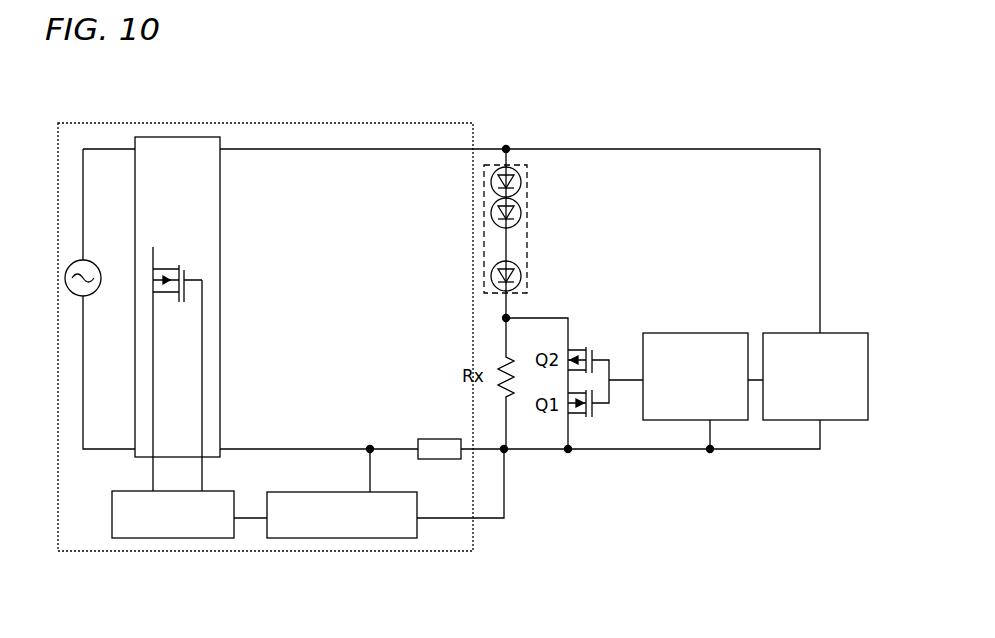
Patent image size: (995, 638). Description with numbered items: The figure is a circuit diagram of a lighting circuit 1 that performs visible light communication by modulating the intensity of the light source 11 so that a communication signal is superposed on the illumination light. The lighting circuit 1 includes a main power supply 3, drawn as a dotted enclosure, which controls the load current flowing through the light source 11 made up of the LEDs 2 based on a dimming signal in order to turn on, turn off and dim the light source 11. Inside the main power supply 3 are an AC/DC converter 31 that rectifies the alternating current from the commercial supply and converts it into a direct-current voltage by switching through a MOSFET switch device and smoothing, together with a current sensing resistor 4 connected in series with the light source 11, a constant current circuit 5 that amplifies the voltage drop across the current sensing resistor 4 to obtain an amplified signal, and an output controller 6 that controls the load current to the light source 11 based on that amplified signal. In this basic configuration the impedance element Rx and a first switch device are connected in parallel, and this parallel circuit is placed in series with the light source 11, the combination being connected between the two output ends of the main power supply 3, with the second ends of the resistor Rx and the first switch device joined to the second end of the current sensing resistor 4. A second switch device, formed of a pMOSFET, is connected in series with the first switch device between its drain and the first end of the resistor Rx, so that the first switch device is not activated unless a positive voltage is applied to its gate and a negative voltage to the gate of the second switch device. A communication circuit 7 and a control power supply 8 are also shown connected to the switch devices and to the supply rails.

The lighting circuit 1 is at (74, 109).
The LED 2 is at (537, 276).
The main power supply 3 is at (420, 123).
The current sensing resistor 4 is at (434, 439).
The constant current circuit 5 is at (340, 538).
The output controller 6 is at (178, 538).
The communication circuit 7 is at (700, 333).
The control power supply DC/DC 8 is at (800, 333).
The light source 11 is at (520, 160).
The AC/DC converter 31 is at (220, 188).